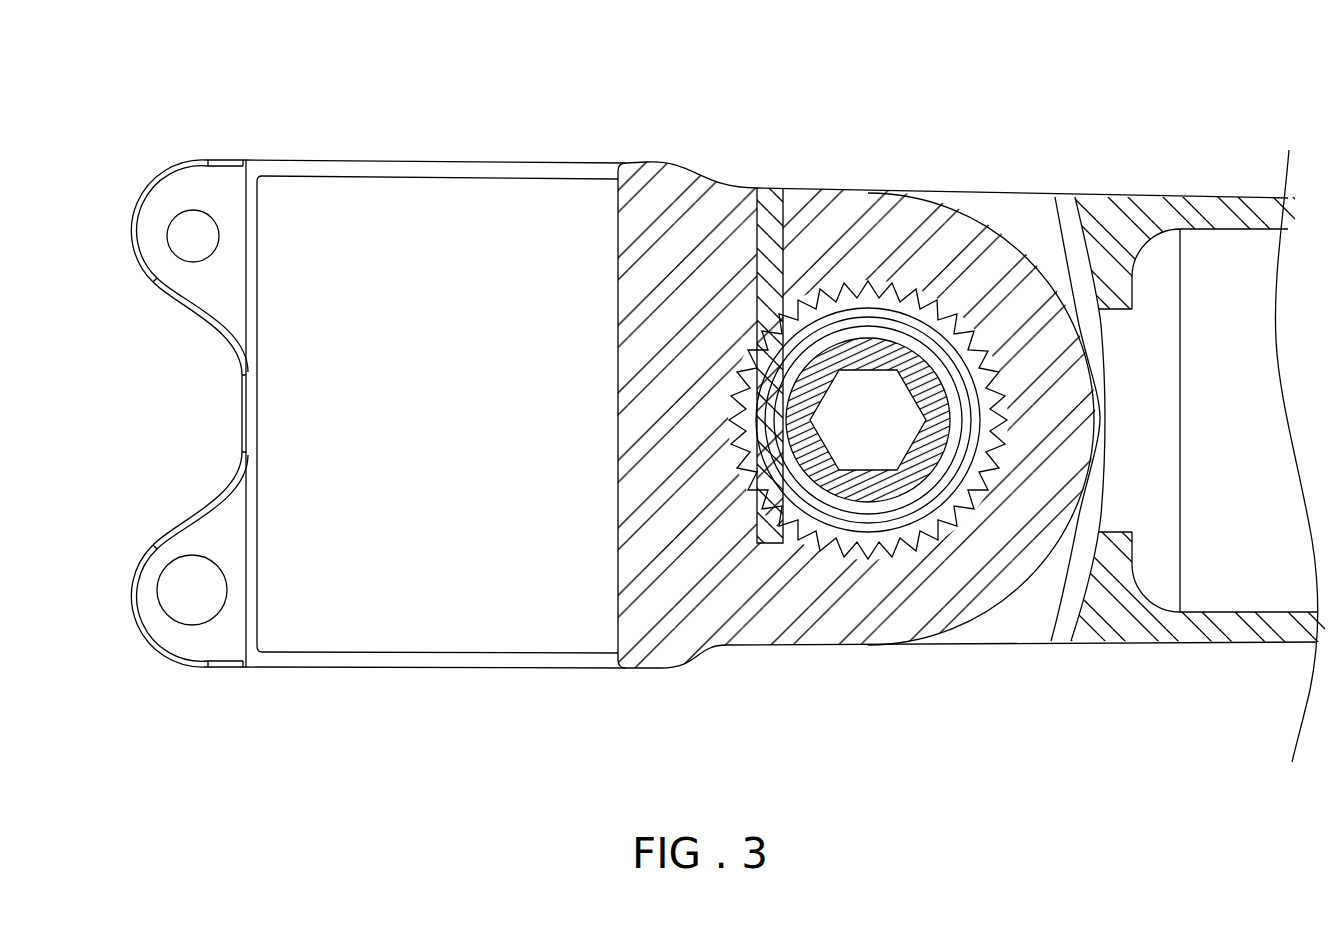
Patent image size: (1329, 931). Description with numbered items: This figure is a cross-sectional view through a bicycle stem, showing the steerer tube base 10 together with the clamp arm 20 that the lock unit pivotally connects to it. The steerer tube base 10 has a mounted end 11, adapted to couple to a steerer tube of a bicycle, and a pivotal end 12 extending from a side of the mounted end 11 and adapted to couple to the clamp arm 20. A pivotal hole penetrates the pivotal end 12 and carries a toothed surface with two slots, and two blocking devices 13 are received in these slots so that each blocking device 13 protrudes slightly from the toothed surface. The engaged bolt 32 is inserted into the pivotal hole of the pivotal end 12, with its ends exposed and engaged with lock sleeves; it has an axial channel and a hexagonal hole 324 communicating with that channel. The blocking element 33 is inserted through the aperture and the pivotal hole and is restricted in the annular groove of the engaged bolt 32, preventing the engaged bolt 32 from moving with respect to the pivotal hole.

The steerer tube base 10 is at (430, 112).
The mounted end 11 is at (220, 188).
The pivotal end 12 is at (658, 190).
The blocking device 13 is at (976, 315).
The clamp arm 20 is at (1212, 217).
The engaged bolt 32 is at (853, 350).
The blocking element 33 is at (777, 212).
The hexagonal hole 324 is at (882, 400).